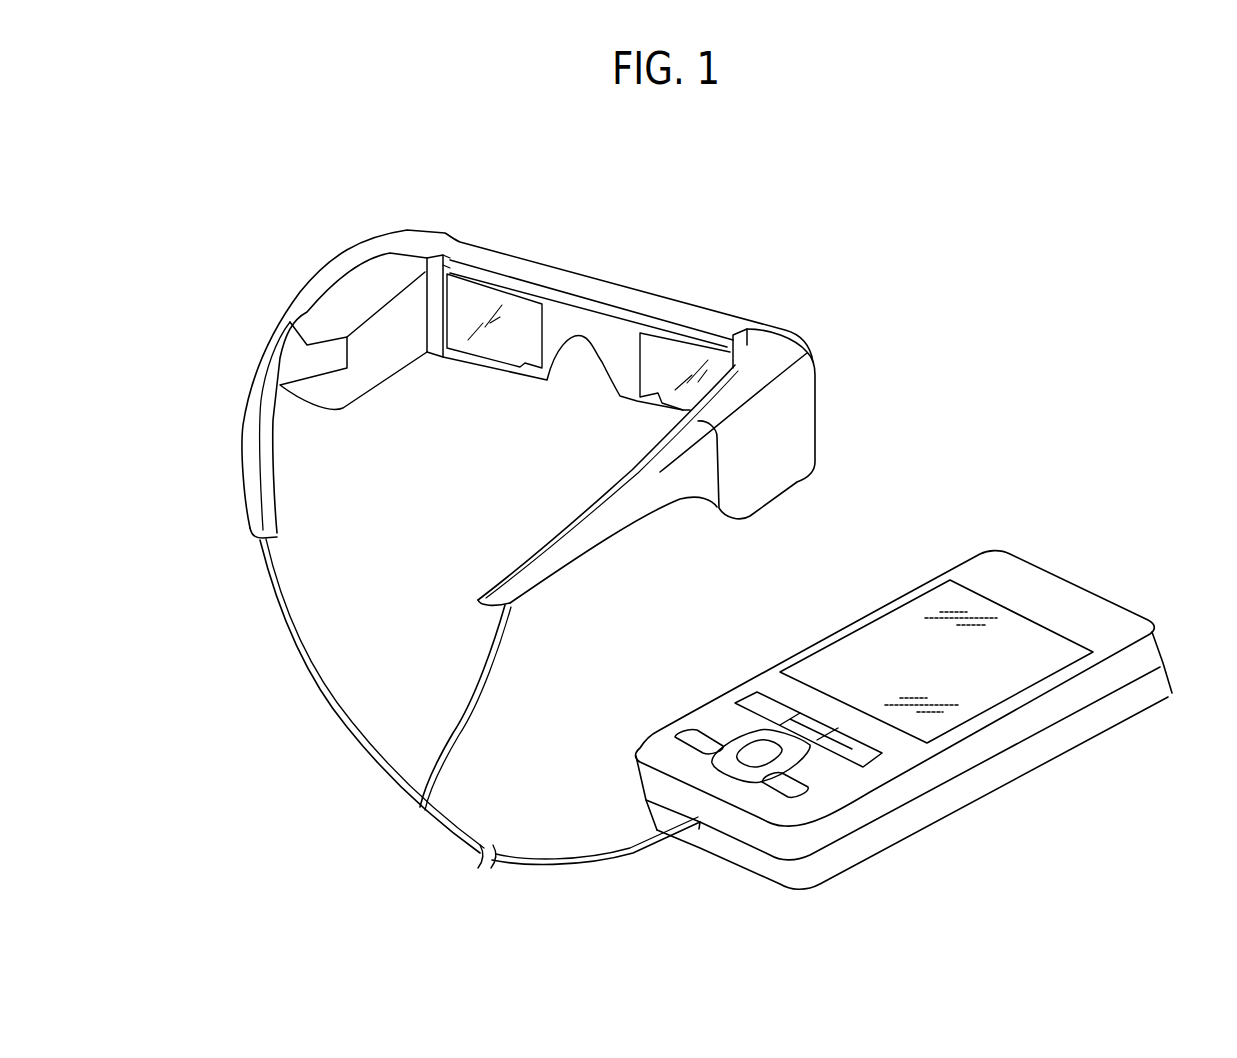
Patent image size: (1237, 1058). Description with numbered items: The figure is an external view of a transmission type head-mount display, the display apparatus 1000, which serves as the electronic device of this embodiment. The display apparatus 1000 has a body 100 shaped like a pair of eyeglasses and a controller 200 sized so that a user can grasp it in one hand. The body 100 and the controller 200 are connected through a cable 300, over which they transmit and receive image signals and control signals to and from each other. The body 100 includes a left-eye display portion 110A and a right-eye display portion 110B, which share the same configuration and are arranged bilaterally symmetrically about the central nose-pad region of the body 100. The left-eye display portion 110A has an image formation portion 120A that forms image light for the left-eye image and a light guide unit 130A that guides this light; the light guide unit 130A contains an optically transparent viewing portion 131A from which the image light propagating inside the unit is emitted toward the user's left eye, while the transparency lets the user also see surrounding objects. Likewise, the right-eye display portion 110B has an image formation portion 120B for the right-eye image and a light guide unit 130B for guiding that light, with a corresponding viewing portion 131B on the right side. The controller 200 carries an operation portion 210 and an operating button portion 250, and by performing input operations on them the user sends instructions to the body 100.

The display apparatus 1000 is at (936, 280).
The body 100 is at (781, 204).
The left-eye display portion 110A is at (523, 238).
The right-eye display portion 110B is at (730, 291).
The image formation portion 120A is at (357, 291).
The image formation portion 120B is at (752, 373).
The light guide unit 130A is at (478, 250).
The light guide unit 130B is at (729, 322).
The viewing portion 131A is at (507, 348).
The right lens / display 131B is at (660, 381).
The controller 200 is at (1098, 571).
The operation portion 210 is at (906, 634).
The operating button portion 250 is at (751, 655).
The cable 300 is at (308, 668).